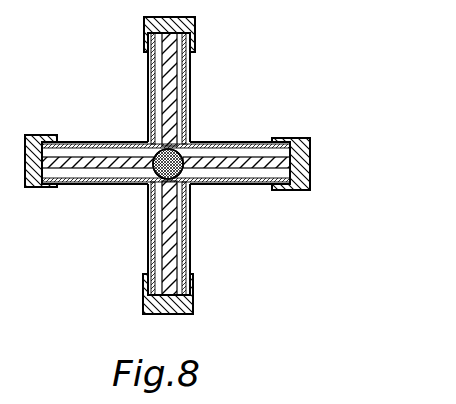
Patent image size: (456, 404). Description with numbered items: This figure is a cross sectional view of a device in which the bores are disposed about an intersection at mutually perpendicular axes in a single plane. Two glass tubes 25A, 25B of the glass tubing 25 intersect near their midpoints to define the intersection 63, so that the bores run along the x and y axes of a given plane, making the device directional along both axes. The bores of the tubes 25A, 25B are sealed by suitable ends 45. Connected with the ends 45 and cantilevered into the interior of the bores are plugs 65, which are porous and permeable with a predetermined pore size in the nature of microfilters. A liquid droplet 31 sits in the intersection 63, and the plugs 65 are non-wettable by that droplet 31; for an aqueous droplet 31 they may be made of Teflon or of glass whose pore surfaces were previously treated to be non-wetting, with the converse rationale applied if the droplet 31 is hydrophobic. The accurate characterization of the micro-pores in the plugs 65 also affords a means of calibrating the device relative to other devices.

The glass tube 25 is at (138, 163).
The glass tube 25A is at (88, 141).
The glass tube 25B is at (188, 93).
The end 45 is at (311, 157).
The liquid droplet 31 is at (153, 182).
The intersection 63 is at (176, 176).
The plug 65 is at (240, 172).